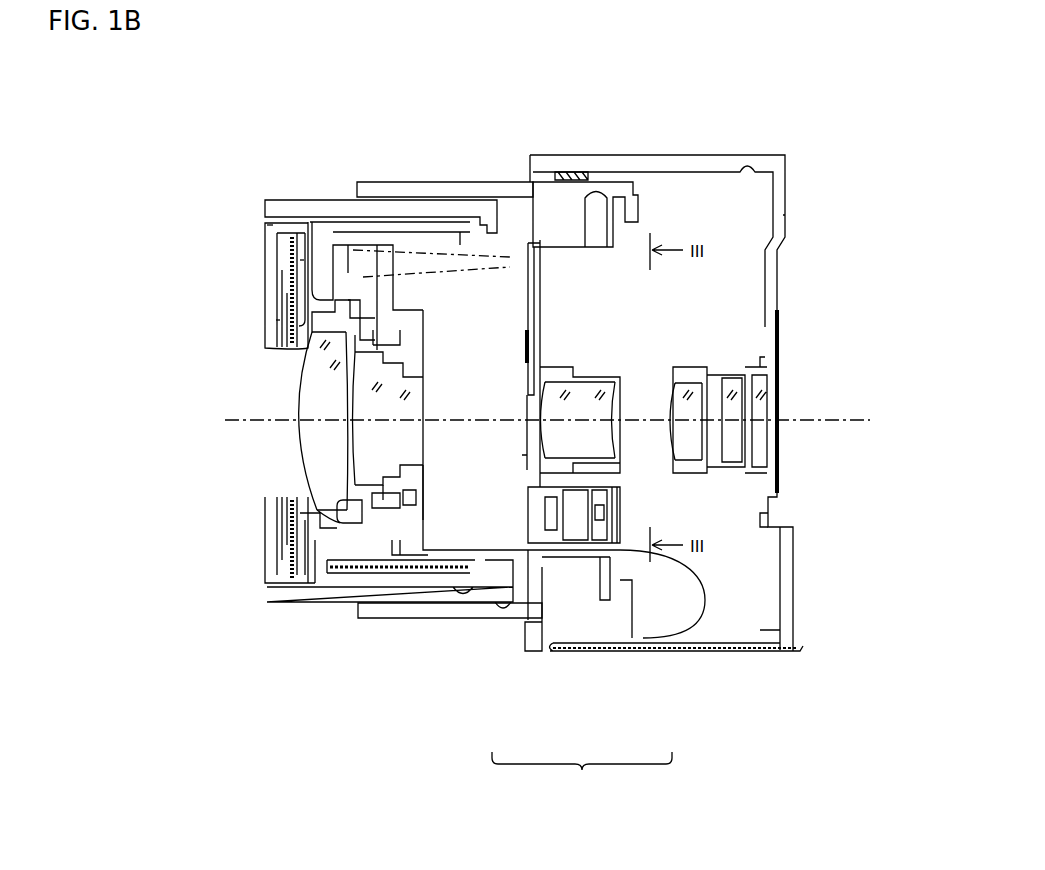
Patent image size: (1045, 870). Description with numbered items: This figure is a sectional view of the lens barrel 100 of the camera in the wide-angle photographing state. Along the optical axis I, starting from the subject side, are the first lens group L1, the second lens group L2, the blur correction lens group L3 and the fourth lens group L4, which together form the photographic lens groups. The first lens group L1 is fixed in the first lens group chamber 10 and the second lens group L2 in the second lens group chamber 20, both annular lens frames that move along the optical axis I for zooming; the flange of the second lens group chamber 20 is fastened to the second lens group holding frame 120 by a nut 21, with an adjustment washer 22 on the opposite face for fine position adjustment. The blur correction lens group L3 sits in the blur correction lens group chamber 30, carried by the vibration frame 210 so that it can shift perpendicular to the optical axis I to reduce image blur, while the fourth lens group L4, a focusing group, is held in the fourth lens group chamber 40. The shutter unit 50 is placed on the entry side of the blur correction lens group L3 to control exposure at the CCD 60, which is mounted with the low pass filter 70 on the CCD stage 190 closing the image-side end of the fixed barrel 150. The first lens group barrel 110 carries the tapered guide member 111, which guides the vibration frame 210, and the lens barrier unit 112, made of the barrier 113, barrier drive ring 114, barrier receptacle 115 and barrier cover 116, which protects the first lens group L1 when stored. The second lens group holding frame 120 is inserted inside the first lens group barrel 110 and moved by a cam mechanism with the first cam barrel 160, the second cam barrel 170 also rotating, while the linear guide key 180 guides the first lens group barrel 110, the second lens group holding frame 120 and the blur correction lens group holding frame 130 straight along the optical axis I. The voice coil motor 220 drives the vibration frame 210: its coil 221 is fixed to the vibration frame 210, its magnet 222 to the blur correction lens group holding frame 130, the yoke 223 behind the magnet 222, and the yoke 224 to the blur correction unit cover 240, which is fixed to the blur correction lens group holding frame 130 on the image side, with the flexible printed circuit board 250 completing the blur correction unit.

The lens barrel 100 is at (182, 145).
The first lens group barrel 110 is at (322, 222).
The guide member 111 is at (423, 253).
The lens barrier unit 112 is at (104, 210).
The barrier 113 is at (278, 320).
The barrier drive ring 114 is at (302, 260).
The barrier receptacle 115 is at (292, 250).
The barrier cover 116 is at (270, 227).
The second lens group holding frame 120 is at (463, 232).
The blur correction lens group holding frame 130 is at (565, 240).
The fixed barrel 150 is at (678, 155).
The first cam barrel 160 is at (380, 188).
The second cam barrel 170 is at (300, 205).
The linear guide key 180 is at (635, 577).
The CCD stage 190 is at (784, 215).
The first lens group chamber 10 is at (338, 510).
The second lens group chamber 20 is at (402, 482).
The nut 21 is at (377, 502).
The adjustment washer 22 is at (410, 500).
The blur correction lens group chamber 30 is at (575, 372).
The fourth lens group chamber 40 is at (695, 466).
The shutter unit 50 is at (533, 257).
The CCD 60 is at (757, 382).
The low pass filter 70 is at (727, 412).
The vibration frame 210 is at (527, 343).
The voice coil motor 220 is at (582, 640).
The coil 221 is at (598, 533).
The magnet 222 is at (577, 517).
The yoke 223 is at (560, 513).
The yoke 224 is at (612, 533).
The blur correction unit cover 240 is at (617, 512).
The flexible printed circuit board 250 is at (705, 598).
The first lens group L1 is at (318, 437).
The second lens group L2 is at (393, 448).
The blur correction lens group L3 is at (582, 395).
The fourth lens group L4 is at (690, 442).
The optical axis I is at (225, 420).